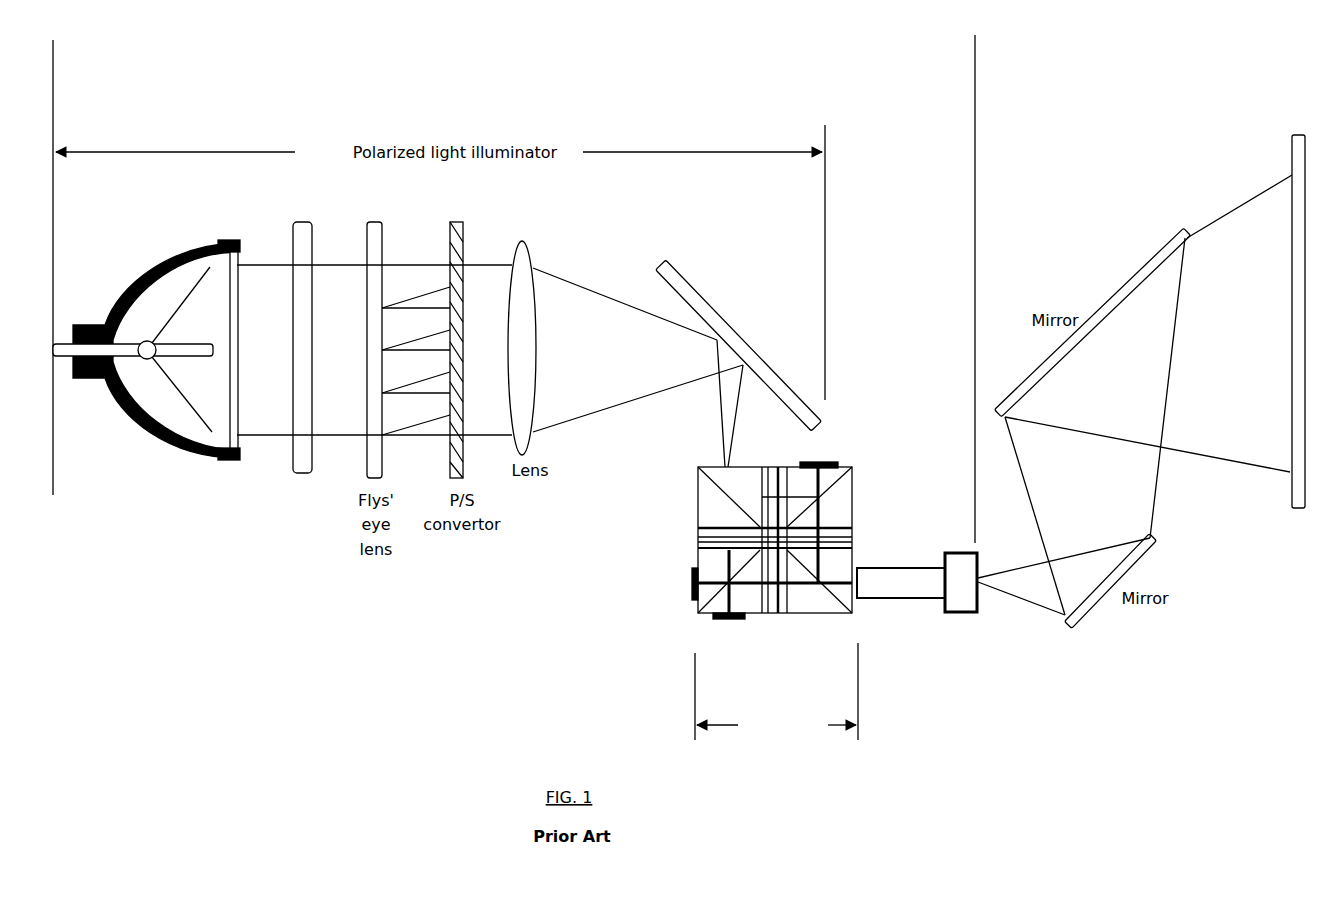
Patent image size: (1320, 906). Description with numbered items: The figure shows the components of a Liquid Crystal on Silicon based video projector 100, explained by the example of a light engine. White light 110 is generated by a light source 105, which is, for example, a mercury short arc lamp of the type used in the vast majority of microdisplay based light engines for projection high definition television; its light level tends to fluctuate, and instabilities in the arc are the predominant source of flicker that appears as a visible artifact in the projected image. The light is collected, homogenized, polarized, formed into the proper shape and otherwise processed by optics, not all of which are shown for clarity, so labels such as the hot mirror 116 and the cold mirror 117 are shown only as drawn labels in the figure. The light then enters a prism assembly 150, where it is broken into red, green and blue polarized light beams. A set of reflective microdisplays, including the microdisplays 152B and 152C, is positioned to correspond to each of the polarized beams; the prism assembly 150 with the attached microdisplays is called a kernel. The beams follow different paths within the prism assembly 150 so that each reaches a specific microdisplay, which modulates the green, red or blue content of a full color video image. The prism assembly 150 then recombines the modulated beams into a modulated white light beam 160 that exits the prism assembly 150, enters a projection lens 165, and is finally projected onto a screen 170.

The LCOS based video projector 100 is at (56, 78).
The light source 105 is at (56, 475).
The white light 110 is at (490, 366).
The hot mirror 116 is at (308, 389).
The cold mirror 117 is at (739, 334).
The prism assembly 150 is at (686, 488).
The reflective microdisplay 152B is at (827, 462).
The reflective microdisplay 152C is at (719, 621).
The modulated white light beam 160 is at (893, 582).
The projection lens 165 is at (917, 585).
The screen 170 is at (1247, 515).